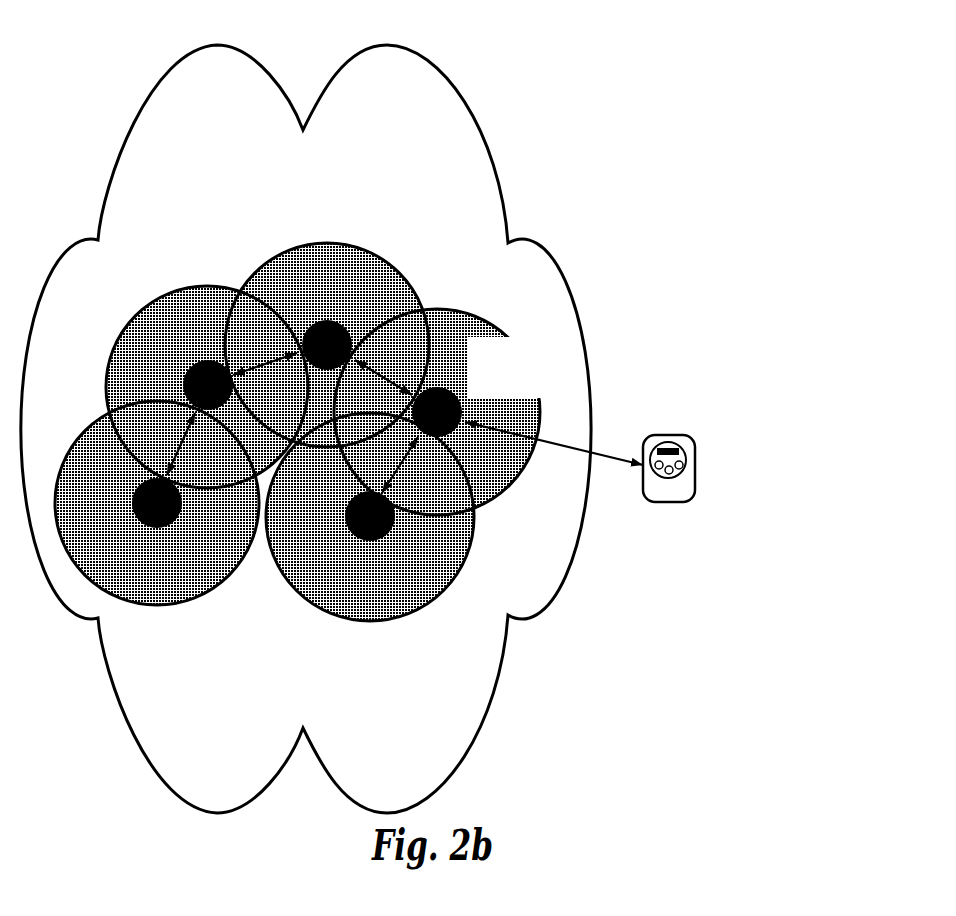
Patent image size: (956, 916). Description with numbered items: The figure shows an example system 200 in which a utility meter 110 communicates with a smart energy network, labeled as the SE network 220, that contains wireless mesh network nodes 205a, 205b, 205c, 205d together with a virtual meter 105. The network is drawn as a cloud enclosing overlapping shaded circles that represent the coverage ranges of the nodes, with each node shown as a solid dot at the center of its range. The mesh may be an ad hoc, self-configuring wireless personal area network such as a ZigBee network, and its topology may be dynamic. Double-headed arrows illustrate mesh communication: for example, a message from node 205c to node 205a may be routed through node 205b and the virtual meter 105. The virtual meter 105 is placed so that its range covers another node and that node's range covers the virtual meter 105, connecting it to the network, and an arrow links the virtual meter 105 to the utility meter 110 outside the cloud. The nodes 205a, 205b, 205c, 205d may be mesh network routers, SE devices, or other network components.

The system 200 is at (674, 34).
The SE network 220 is at (453, 88).
The virtual meter 105 is at (455, 388).
The utility meter 110 is at (695, 463).
The node 205a is at (385, 526).
The node 205b is at (323, 330).
The node 205c is at (200, 372).
The node 205d is at (165, 520).